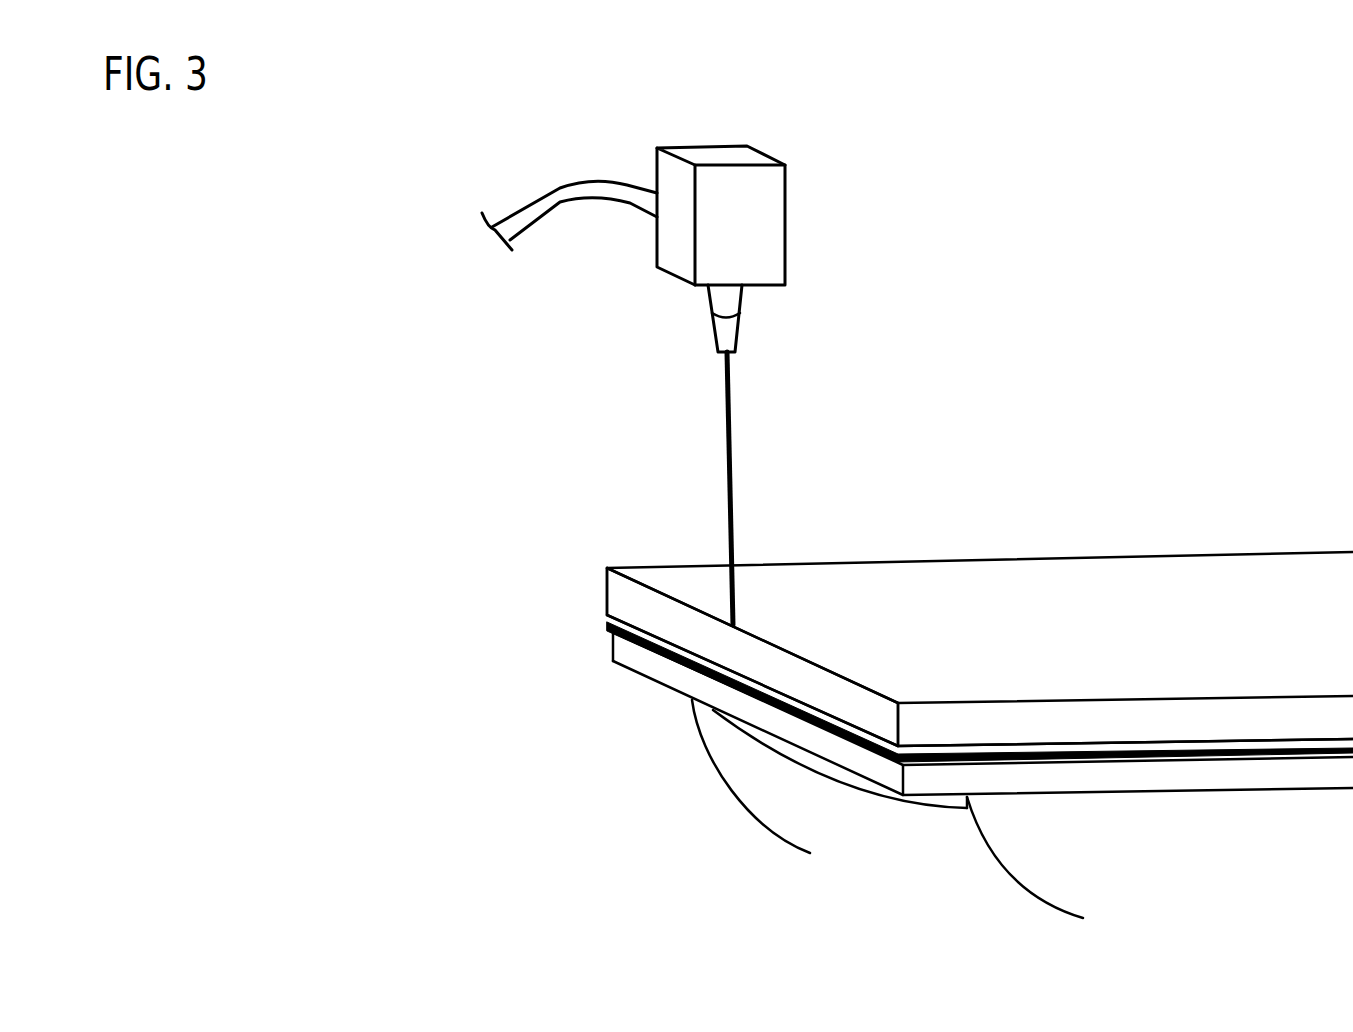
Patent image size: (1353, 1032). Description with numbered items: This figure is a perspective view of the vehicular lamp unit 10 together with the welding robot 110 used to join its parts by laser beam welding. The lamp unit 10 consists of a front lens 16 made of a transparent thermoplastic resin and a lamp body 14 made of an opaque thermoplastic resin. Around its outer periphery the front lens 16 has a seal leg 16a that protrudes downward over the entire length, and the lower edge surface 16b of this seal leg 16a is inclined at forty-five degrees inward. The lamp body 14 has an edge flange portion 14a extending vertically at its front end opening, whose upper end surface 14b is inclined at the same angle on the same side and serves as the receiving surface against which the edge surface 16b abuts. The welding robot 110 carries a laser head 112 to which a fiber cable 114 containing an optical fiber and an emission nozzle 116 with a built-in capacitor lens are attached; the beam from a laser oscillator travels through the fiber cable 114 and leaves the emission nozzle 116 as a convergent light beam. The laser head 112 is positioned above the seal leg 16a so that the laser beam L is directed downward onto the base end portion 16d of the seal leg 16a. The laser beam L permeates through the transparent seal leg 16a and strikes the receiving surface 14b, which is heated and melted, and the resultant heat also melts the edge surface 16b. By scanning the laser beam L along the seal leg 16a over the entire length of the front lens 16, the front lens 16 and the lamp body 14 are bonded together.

The vehicular lamp unit 10 is at (1101, 472).
The lamp body 14 is at (770, 813).
The edge flange portion 14a is at (610, 650).
The end surface (receiving surface) 14b is at (680, 648).
The front lens 16 is at (1195, 566).
The seal leg 16a is at (603, 587).
The edge surface 16b is at (678, 648).
The base end portion 16d is at (776, 641).
The welding robot 110 is at (890, 176).
The laser head 112 is at (757, 218).
The fiber cable 114 is at (577, 192).
The emission nozzle 116 is at (735, 330).
The laser beam L is at (727, 450).